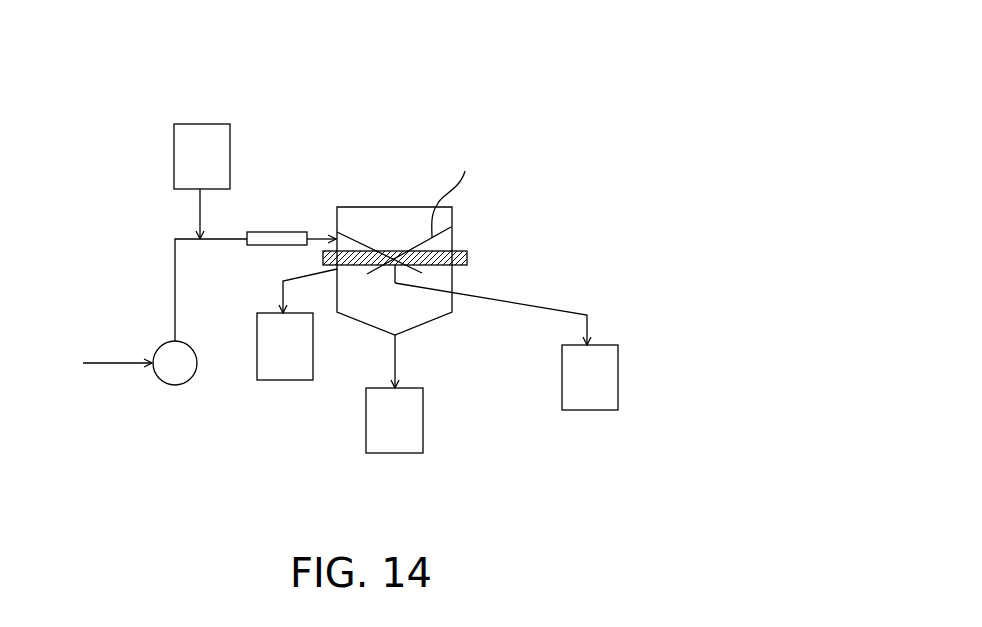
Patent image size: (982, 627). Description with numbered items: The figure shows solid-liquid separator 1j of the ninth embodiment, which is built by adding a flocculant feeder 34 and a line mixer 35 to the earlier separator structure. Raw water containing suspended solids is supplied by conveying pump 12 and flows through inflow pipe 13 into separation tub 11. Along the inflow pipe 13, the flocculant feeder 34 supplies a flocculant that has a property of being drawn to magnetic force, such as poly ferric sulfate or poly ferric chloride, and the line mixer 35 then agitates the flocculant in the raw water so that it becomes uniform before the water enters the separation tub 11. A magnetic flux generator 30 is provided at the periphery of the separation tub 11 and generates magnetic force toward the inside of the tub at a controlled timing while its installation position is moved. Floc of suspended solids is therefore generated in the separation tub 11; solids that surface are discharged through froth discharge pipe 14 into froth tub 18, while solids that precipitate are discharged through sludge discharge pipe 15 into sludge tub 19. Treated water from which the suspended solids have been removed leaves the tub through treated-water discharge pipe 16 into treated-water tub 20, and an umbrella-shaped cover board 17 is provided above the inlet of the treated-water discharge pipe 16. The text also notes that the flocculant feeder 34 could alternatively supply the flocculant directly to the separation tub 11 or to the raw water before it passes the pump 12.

The solid-liquid separator 1j is at (555, 106).
The separation tub 11 is at (452, 216).
The conveying pump 12 is at (175, 385).
The inflow pipe 13 is at (215, 243).
The froth discharge pipe 14 is at (313, 274).
The sludge discharge pipe 15 is at (397, 358).
The treated-water discharge pipe 16 is at (582, 312).
The cover board 17 is at (408, 266).
The froth tub 18 is at (282, 380).
The sludge tub 19 is at (393, 453).
The treated-water tub 20 is at (588, 410).
The magnetic flux generator 30 is at (467, 258).
The flocculant feeder 34 is at (204, 124).
The line mixer 35 is at (280, 232).